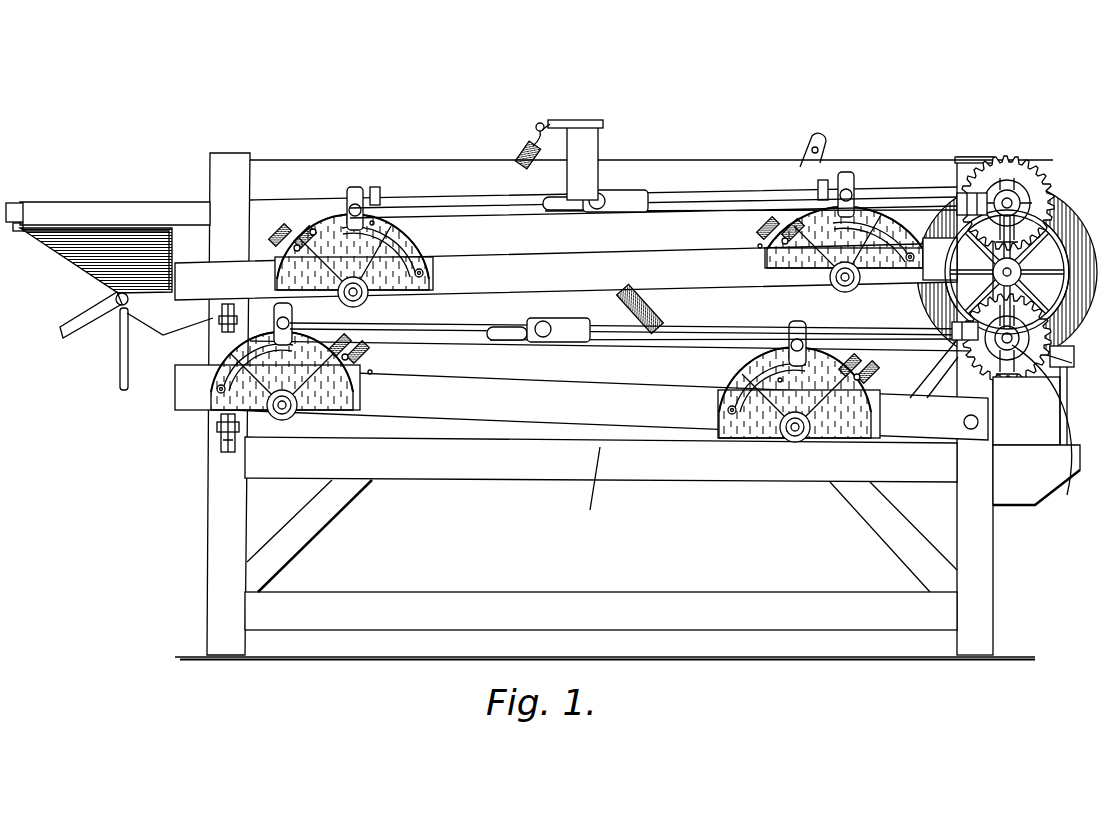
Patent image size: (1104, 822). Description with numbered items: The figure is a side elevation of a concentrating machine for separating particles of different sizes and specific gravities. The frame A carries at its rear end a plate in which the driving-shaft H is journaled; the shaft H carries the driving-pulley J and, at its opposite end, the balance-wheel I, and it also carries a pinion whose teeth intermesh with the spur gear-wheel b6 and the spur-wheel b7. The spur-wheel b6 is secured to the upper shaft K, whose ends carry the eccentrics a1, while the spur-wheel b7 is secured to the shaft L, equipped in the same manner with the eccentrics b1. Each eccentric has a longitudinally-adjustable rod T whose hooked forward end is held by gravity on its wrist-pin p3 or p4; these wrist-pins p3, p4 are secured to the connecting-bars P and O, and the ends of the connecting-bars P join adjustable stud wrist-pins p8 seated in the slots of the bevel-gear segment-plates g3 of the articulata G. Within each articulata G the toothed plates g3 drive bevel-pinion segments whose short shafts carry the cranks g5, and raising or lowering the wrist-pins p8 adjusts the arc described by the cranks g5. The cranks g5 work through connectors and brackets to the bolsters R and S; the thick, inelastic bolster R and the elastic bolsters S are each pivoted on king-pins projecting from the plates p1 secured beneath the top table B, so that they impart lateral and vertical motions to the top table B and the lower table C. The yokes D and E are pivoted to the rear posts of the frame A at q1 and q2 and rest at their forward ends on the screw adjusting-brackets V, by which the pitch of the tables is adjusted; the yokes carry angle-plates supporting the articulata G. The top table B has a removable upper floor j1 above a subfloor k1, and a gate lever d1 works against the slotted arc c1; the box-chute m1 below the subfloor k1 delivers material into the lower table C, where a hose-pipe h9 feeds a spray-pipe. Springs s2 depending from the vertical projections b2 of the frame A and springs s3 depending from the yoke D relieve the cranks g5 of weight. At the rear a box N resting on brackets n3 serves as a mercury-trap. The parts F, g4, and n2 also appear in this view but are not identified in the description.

The frame A is at (614, 406).
The top table B is at (484, 176).
The lower table C is at (224, 312).
The yoke D is at (566, 271).
The yoke E is at (583, 403).
The bracket plate F is at (267, 387).
The articulata G is at (182, 436).
The driving-shaft H is at (993, 275).
The balance-wheel I is at (903, 301).
The driving-pulley J is at (996, 252).
The upper shaft K is at (1008, 198).
The shaft L is at (1030, 352).
The box N is at (1030, 406).
The connecting-bar O is at (530, 330).
The connecting-bar P is at (502, 200).
The bolster R is at (250, 362).
The bolster S is at (278, 232).
The longitudinally-adjustable rod T is at (677, 200).
The screw adjusting-bracket V is at (222, 318).
The eccentric a1 is at (1053, 162).
The eccentric b1 is at (1012, 342).
The vertical projection b2 is at (575, 160).
The spur gear-wheel b6 is at (992, 172).
The spur-wheel b7 is at (1042, 438).
The arc c1 is at (797, 164).
The lever d1 is at (806, 143).
The bevel-gear segment-plate g3 is at (372, 223).
The slot pin g4 is at (403, 257).
The crank g5 is at (322, 238).
The hose-pipe h9 is at (120, 372).
The upper floor j1 is at (18, 206).
The subfloor k1 is at (22, 232).
The box-chute m1 is at (96, 260).
The arm n2 is at (136, 320).
The bracket n3 is at (1036, 475).
The plate p1 is at (288, 232).
The wrist-pin p3 is at (600, 195).
The wrist-pin p4 is at (545, 325).
The adjustable stud wrist-pin p8 is at (355, 198).
The pivot q1 is at (957, 200).
The pivot q2 is at (964, 427).
The spring s2 is at (524, 146).
The spring s3 is at (628, 300).